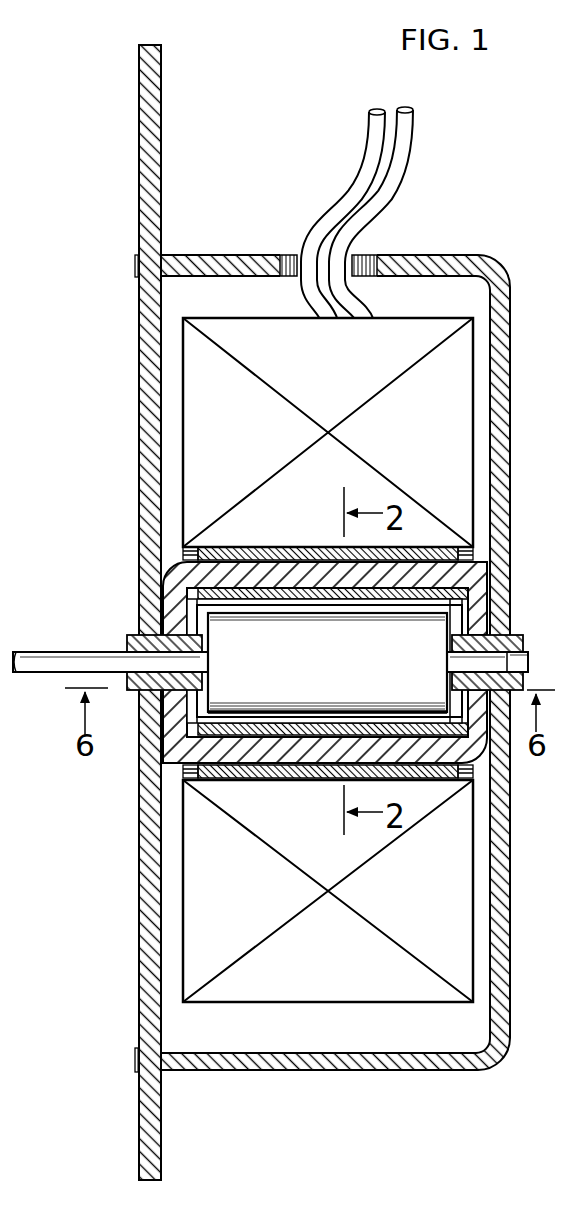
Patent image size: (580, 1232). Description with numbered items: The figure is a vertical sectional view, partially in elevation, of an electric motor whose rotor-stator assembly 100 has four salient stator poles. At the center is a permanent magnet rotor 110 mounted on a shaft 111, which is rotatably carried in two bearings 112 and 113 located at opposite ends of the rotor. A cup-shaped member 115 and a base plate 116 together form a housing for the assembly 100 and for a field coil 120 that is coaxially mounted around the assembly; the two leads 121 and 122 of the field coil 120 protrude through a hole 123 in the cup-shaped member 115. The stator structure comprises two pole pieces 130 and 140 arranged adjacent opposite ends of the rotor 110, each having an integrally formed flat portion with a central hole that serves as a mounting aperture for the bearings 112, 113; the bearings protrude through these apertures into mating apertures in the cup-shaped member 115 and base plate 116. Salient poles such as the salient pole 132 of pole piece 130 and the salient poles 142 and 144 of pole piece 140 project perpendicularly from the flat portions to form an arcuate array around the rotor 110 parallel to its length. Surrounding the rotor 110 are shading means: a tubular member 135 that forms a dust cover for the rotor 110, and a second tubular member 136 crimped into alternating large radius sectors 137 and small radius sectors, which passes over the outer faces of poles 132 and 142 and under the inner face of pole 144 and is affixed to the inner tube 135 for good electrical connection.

The rotor-stator assembly 100 is at (296, 612).
The permanent magnet rotor 110 is at (423, 630).
The shaft 111 is at (77, 652).
The bearing 112 is at (132, 637).
The bearing 113 is at (512, 637).
The cup-shaped member 115 is at (507, 395).
The base plate 116 is at (143, 518).
The field coil 120 is at (455, 372).
The lead 121 is at (408, 162).
The lead 122 is at (348, 160).
The hole 123 is at (365, 257).
The pole piece 130 is at (182, 580).
The salient pole 132 is at (472, 590).
The tubular member 135 is at (222, 753).
The second tubular member 136 is at (195, 782).
The large radius sector 137 is at (413, 545).
The pole piece 140 is at (512, 782).
The salient pole 142 is at (192, 773).
The salient pole 144 is at (579, 682).